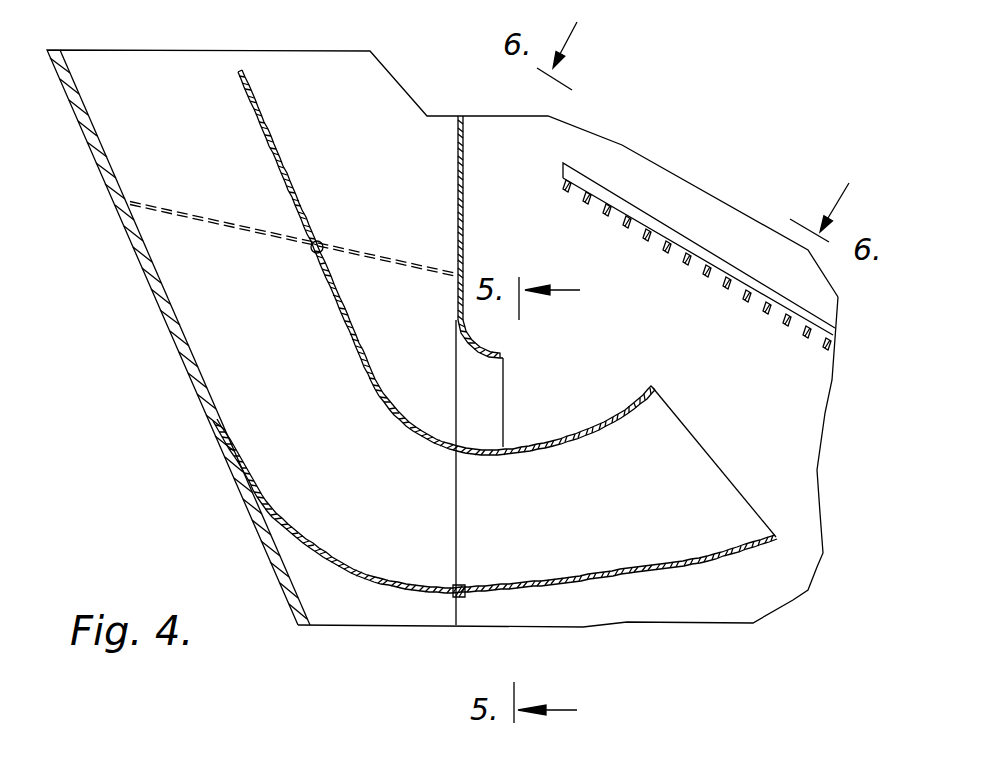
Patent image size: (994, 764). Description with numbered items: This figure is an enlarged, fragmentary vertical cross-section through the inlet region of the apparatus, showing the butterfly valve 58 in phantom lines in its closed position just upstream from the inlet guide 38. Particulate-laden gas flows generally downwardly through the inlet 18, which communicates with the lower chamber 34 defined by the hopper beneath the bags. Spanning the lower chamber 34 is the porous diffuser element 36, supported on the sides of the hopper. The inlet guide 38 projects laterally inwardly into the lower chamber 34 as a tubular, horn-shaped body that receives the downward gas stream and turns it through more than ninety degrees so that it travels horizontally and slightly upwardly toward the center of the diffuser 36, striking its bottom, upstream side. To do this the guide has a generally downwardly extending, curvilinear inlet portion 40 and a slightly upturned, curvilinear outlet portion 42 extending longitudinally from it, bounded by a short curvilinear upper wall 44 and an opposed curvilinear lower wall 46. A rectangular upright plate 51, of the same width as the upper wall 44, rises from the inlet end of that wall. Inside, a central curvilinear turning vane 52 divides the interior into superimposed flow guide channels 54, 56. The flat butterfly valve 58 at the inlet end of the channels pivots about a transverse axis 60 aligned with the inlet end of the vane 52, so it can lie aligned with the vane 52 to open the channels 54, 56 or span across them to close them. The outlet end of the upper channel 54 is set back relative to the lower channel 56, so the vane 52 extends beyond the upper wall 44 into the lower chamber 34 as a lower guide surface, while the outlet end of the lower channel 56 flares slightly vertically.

The inlet 18 is at (167, 60).
The lower chamber 34 is at (797, 460).
The porous diffuser element 36 is at (717, 290).
The inlet guide 38 is at (357, 578).
The inlet portion 40 is at (305, 543).
The outlet portion 42 is at (688, 572).
The upper wall 44 is at (477, 343).
The lower wall 46 is at (418, 592).
The upright plate 51 is at (464, 165).
The turning vane 52 is at (532, 443).
The upper flow guide channel 54 is at (488, 397).
The lower flow guide channel 56 is at (505, 568).
The butterfly valve 58 is at (285, 164).
The transverse axis 60 is at (315, 254).